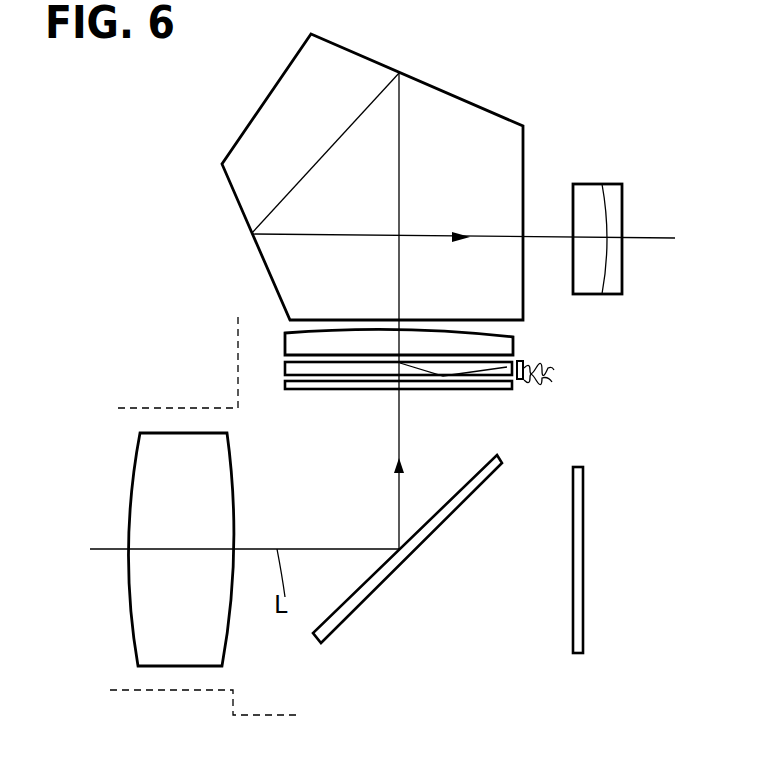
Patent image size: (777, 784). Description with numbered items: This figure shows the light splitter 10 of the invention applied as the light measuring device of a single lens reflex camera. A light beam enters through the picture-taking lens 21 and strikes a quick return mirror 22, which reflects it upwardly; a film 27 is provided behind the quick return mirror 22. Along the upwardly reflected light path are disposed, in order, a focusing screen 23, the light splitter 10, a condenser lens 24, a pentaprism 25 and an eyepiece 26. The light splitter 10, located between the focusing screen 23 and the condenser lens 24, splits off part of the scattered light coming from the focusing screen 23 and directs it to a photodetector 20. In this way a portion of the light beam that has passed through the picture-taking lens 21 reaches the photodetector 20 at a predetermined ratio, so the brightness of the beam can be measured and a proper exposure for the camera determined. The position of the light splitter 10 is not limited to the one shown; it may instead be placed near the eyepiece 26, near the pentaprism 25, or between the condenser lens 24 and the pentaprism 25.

The light splitter 10 is at (261, 408).
The photodetector 20 is at (521, 362).
The picture-taking lens 21 is at (148, 463).
The quick return mirror 22 is at (395, 567).
The focusing screen 23 is at (342, 386).
The condenser lens 24 is at (287, 333).
The pentaprism 25 is at (483, 123).
The eyepiece 26 is at (615, 202).
The film 27 is at (578, 518).